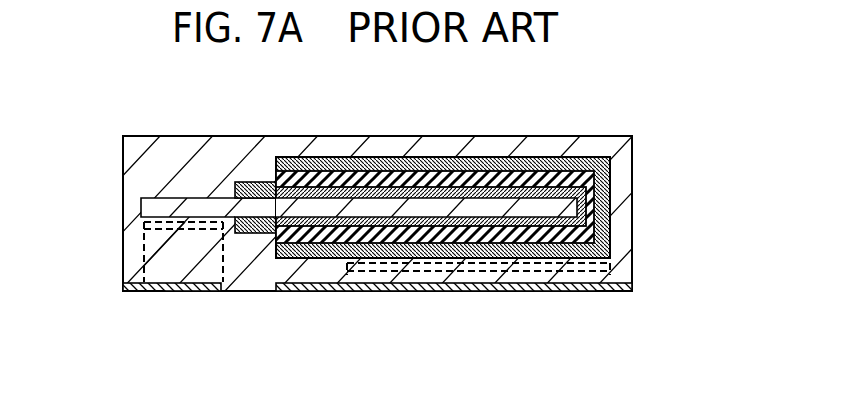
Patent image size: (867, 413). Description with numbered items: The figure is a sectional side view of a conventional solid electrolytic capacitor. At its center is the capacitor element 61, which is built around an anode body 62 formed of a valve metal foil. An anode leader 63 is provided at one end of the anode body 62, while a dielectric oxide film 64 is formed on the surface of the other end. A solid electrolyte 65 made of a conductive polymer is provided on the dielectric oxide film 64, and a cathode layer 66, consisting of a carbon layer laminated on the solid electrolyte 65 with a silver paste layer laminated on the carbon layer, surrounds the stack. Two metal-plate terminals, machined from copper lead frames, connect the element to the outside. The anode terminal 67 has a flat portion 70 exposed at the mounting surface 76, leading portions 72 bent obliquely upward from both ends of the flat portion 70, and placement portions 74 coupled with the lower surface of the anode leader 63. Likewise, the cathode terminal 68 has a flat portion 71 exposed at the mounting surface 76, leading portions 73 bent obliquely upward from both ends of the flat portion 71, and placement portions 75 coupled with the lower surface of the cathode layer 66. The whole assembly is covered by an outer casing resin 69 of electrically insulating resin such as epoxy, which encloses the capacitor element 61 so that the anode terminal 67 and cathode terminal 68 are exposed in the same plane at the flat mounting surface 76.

The capacitor element 61 is at (610, 185).
The anode body 62 is at (305, 203).
The anode leader 63 is at (192, 208).
The dielectric oxide film 64 is at (364, 185).
The solid electrolyte 65 is at (425, 192).
The cathode layer 66 is at (492, 166).
The anode terminal 67 is at (153, 300).
The cathode terminal 68 is at (525, 297).
The outer casing resin 69 is at (143, 173).
The flat portion 70 is at (142, 288).
The flat portion 71 is at (608, 292).
The leading portions 72 is at (182, 268).
The leading portions 73 is at (606, 278).
The placement portions 74 is at (145, 228).
The placement portions 75 is at (597, 265).
The mounting surface 76 is at (252, 292).